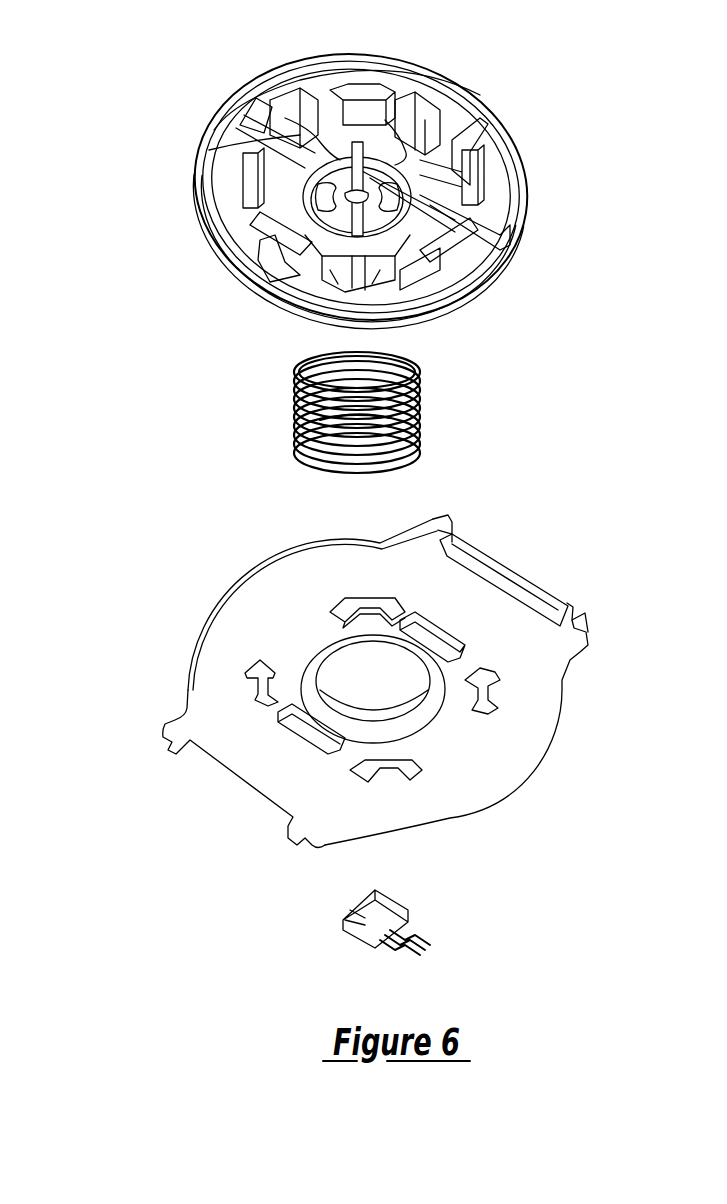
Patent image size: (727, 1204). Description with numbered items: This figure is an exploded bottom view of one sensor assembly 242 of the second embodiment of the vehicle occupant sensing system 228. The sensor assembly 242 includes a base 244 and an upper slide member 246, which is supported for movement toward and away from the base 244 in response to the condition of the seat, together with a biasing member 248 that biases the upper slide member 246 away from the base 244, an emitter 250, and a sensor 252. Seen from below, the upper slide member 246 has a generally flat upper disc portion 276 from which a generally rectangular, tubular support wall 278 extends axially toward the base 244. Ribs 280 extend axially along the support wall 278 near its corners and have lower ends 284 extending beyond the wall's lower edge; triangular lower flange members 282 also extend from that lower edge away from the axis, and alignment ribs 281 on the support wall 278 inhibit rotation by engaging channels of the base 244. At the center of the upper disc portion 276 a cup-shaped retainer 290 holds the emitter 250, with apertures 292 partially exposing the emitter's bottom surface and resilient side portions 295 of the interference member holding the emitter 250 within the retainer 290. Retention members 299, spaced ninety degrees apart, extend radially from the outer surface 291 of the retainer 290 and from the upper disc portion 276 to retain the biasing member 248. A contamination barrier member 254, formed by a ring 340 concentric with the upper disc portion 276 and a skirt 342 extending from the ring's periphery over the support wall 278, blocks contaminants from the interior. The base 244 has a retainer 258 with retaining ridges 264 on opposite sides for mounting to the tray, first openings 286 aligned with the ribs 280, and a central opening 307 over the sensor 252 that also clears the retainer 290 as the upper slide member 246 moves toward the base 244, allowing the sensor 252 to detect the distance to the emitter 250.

The vehicle occupant sensing system 228 is at (623, 50).
The sensor assembly 242 is at (118, 463).
The upper slide member 246 is at (188, 182).
The contamination barrier member 254 is at (474, 288).
The retention member 299 is at (300, 128).
The alignment rib 281 is at (283, 125).
The outer surface of the retainer 291 is at (335, 155).
The lower flange member 282 is at (420, 150).
The support wall 278 is at (455, 150).
The rib 280 is at (480, 162).
The side portion 295 is at (470, 178).
The lower end 284 is at (480, 237).
The aperture 292 is at (290, 250).
The emitter 250 is at (352, 204).
The upper disc portion 276 is at (330, 196).
The retainer 290 is at (388, 212).
The ring 340 is at (262, 137).
The skirt 342 is at (262, 92).
The biasing member 248 is at (293, 402).
The base 244 is at (186, 663).
The retainer 258 is at (498, 758).
The retaining ridge 264 is at (494, 580).
The opening 307 is at (448, 712).
The first opening 286 is at (482, 694).
The sensor 252 is at (362, 920).